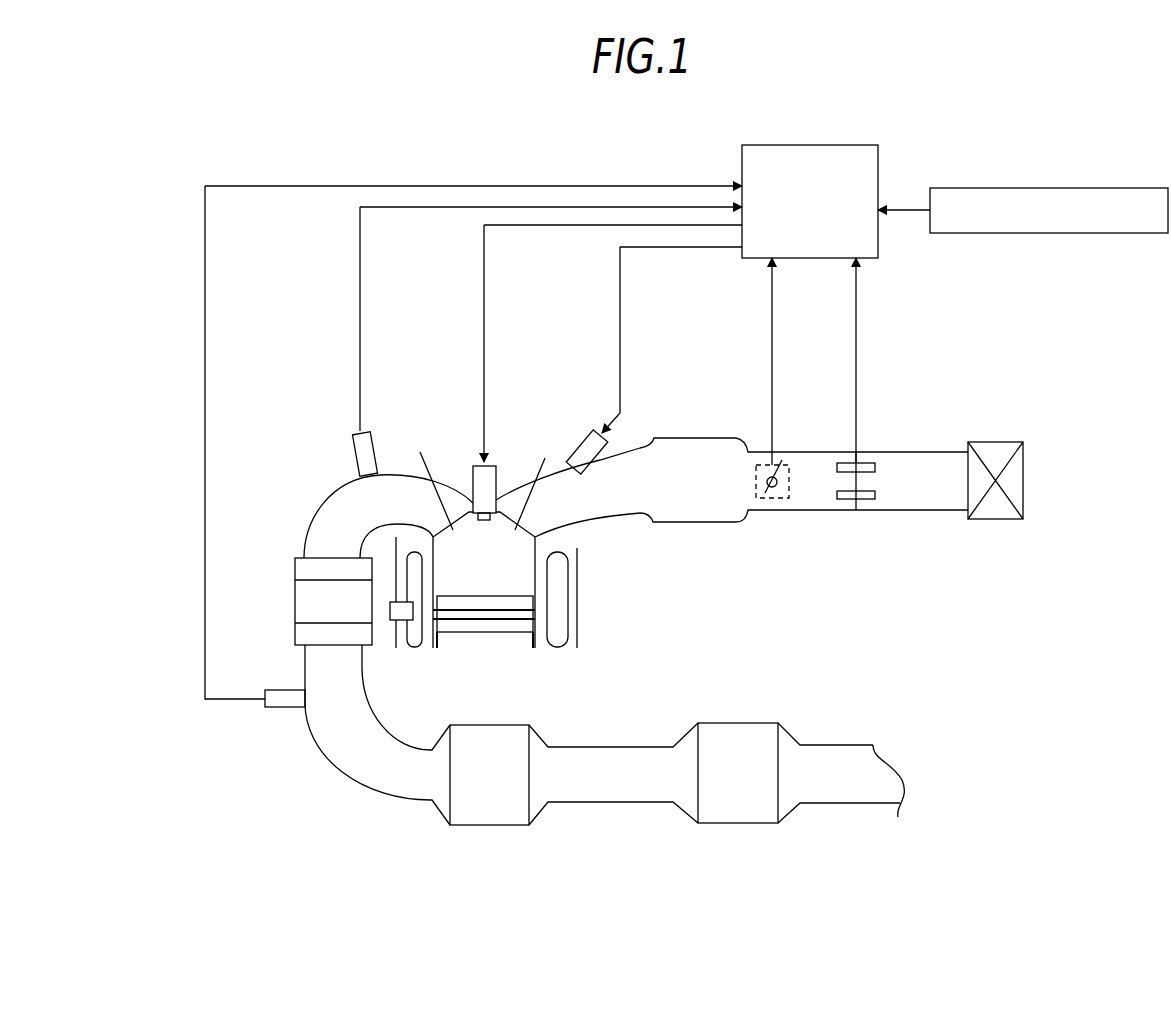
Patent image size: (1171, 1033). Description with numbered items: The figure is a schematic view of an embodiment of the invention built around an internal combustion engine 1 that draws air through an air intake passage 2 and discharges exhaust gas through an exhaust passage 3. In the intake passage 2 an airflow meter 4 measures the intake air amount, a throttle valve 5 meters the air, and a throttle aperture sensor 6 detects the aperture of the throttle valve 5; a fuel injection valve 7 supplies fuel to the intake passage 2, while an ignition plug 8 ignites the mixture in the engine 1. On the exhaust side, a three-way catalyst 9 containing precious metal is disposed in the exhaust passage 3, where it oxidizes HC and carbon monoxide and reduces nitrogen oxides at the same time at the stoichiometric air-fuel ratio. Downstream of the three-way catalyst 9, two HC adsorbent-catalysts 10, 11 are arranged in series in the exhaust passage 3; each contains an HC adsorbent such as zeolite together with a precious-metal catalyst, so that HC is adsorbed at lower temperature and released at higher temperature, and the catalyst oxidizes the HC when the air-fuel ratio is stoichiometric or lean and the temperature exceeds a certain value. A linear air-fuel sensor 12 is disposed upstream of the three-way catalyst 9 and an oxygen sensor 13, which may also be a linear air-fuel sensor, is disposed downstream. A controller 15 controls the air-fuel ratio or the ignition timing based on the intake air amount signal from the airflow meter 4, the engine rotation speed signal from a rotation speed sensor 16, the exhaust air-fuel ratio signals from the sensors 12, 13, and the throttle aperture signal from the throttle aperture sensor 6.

The internal combustion engine 1 is at (577, 602).
The air intake passage 2 is at (920, 450).
The exhaust passage 3 is at (617, 747).
The airflow meter 4 is at (867, 510).
The throttle valve 5 is at (770, 507).
The throttle aperture sensor 6 is at (789, 490).
The fuel injection valve 7 is at (618, 440).
The ignition plug 8 is at (492, 463).
The three-way catalyst 9 is at (295, 628).
The HC adsorbent-catalyst 10 is at (498, 825).
The HC adsorbent-catalyst 11 is at (738, 823).
The linear air-fuel sensor 12 is at (377, 448).
The oxygen sensor 13 is at (283, 708).
The controller 15 is at (878, 233).
The rotation speed sensor 16 is at (1082, 188).